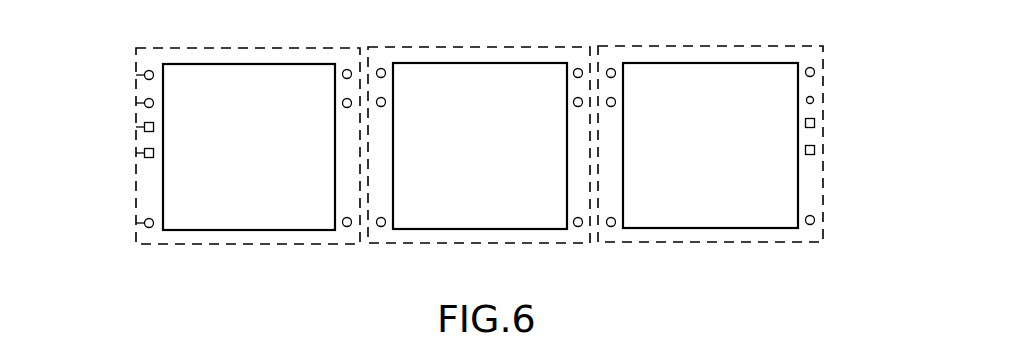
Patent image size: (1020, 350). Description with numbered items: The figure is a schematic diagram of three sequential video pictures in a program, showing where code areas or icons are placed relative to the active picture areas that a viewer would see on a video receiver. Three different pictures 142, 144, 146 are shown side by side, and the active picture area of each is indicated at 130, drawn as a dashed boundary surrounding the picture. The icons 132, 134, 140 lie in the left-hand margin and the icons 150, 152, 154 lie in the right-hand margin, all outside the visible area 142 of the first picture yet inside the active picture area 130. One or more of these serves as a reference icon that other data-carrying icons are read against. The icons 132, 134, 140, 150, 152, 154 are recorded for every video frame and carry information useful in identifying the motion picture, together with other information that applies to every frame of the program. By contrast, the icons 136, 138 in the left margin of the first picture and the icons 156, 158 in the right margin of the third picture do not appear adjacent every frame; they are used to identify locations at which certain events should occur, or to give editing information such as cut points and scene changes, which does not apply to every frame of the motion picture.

The active picture area 130 is at (215, 247).
The icon 132 is at (144, 75).
The icon 134 is at (144, 103).
The icon 136 is at (144, 127).
The icon 138 is at (144, 153).
The icon 140 is at (144, 223).
The visible area of first picture 142 is at (273, 163).
The second picture 144 is at (505, 161).
The third picture 146 is at (738, 153).
The icon 150 is at (346, 69).
The icon 152 is at (342, 103).
The icon 154 is at (347, 227).
The icon 156 is at (815, 123).
The icon 158 is at (815, 150).